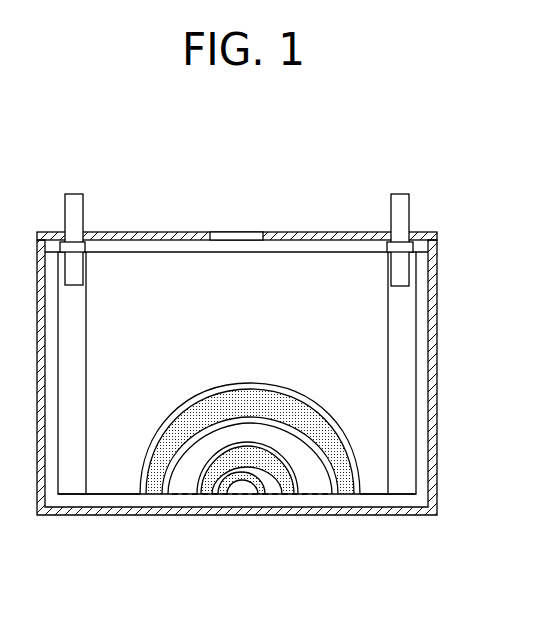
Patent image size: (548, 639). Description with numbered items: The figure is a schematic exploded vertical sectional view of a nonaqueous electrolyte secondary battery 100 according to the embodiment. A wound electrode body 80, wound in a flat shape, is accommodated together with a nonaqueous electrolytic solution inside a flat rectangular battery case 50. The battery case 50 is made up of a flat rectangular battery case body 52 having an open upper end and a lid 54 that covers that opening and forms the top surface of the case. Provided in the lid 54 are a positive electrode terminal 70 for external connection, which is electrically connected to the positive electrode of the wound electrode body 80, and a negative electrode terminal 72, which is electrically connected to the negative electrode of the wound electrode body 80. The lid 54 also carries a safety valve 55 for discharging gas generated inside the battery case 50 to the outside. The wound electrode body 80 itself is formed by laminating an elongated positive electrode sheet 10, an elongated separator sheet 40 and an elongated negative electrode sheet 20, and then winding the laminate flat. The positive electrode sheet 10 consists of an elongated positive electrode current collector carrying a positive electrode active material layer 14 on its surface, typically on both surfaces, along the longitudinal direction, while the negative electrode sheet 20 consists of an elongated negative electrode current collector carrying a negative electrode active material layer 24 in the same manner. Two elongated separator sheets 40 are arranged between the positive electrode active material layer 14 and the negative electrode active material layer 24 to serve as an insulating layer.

The nonaqueous electrolyte secondary battery 100 is at (436, 141).
The battery case 50 is at (438, 372).
The battery case body 52 is at (432, 475).
The lid 54 is at (335, 232).
The safety valve 55 is at (228, 232).
The positive electrode terminal 70 is at (73, 200).
The negative electrode terminal 72 is at (398, 205).
The wound electrode body 80 is at (370, 496).
The positive electrode sheet 10 is at (142, 487).
The positive electrode active material layer 14 is at (250, 441).
The negative electrode sheet 20 is at (212, 483).
The negative electrode active material layer 24 is at (247, 470).
The separator sheet 40 is at (112, 478).